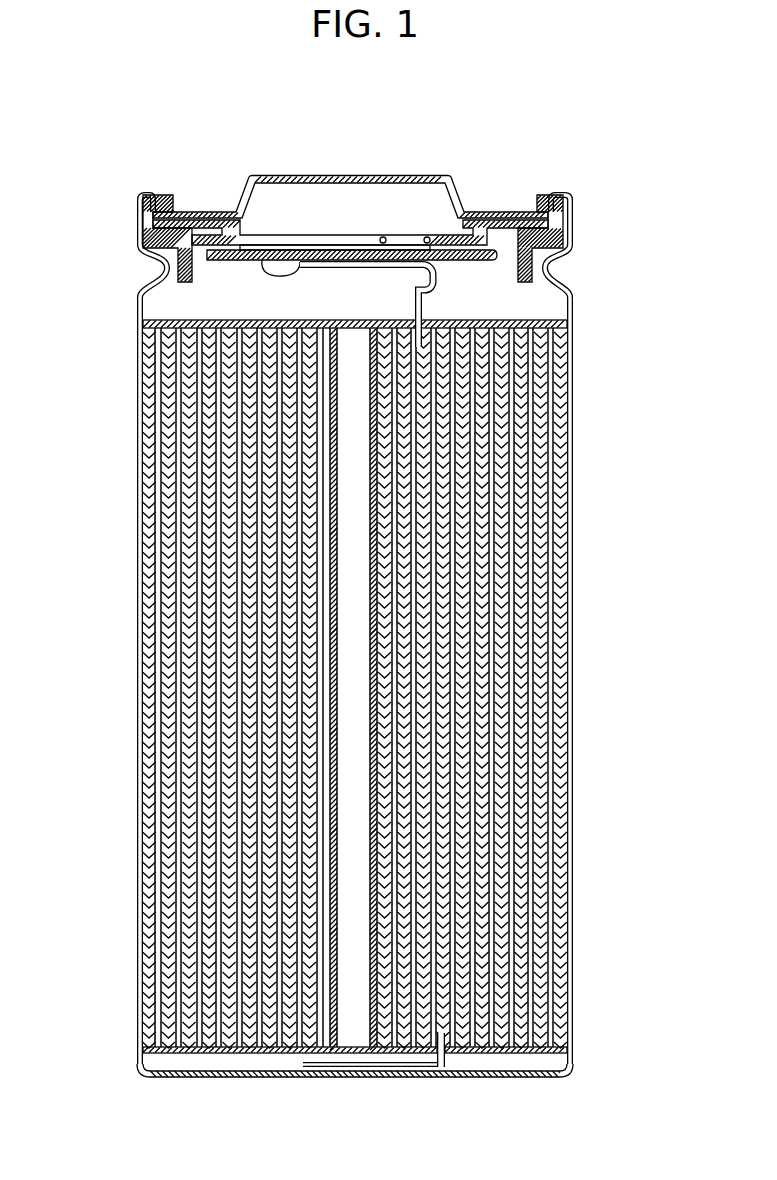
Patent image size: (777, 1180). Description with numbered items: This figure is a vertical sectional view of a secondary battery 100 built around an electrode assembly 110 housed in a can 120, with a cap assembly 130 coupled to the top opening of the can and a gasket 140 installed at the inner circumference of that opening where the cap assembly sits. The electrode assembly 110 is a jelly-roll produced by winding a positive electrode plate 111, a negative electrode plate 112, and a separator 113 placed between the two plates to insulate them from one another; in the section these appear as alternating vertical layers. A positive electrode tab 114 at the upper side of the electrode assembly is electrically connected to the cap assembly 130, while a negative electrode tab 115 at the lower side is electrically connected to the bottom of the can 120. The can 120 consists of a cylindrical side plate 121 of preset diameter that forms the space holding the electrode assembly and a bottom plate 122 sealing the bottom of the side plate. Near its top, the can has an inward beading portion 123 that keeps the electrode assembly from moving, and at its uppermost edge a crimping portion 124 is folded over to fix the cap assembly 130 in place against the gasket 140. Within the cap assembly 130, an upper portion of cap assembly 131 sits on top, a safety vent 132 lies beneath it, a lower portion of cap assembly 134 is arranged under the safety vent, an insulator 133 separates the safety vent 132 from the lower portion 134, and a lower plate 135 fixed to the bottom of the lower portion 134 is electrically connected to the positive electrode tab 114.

The secondary battery 100 is at (94, 122).
The electrode assembly 110 is at (418, 686).
The positive electrode plate 111 is at (540, 433).
The negative electrode plate 112 is at (645, 440).
The separator 113 is at (552, 400).
The positive electrode tab 114 is at (422, 302).
The negative electrode tab 115 is at (399, 1077).
The can 120 is at (405, 648).
The cylindrical side plate 121 is at (580, 877).
The bottom plate 122 is at (480, 1076).
The beading portion 123 is at (546, 265).
The crimping portion 124 is at (563, 192).
The cap assembly 130 is at (350, 178).
The upper portion of cap assembly 131 is at (390, 176).
The safety vent 132 is at (455, 243).
The insulator 133 is at (503, 215).
The lower portion of cap assembly 134 is at (312, 248).
The lower plate 135 is at (280, 198).
The gasket 140 is at (570, 232).